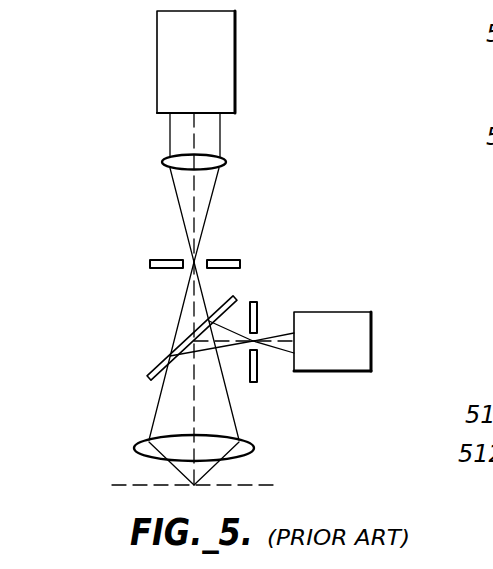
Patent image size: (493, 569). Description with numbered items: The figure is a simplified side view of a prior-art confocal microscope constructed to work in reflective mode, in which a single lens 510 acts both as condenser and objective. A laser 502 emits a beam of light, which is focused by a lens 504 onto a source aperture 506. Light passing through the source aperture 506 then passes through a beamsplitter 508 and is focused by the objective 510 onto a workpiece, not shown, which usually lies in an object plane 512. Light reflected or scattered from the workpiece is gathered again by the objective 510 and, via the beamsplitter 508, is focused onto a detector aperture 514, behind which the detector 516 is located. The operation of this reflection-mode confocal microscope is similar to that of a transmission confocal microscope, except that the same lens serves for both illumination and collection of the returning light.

The laser 502 is at (157, 52).
The lens 504 is at (165, 160).
The source aperture 506 is at (230, 258).
The beamsplitter 508 is at (240, 297).
The lens (objective) 510 is at (140, 447).
The object plane 512 is at (117, 483).
The detector aperture 514 is at (258, 375).
The detector 516 is at (371, 330).